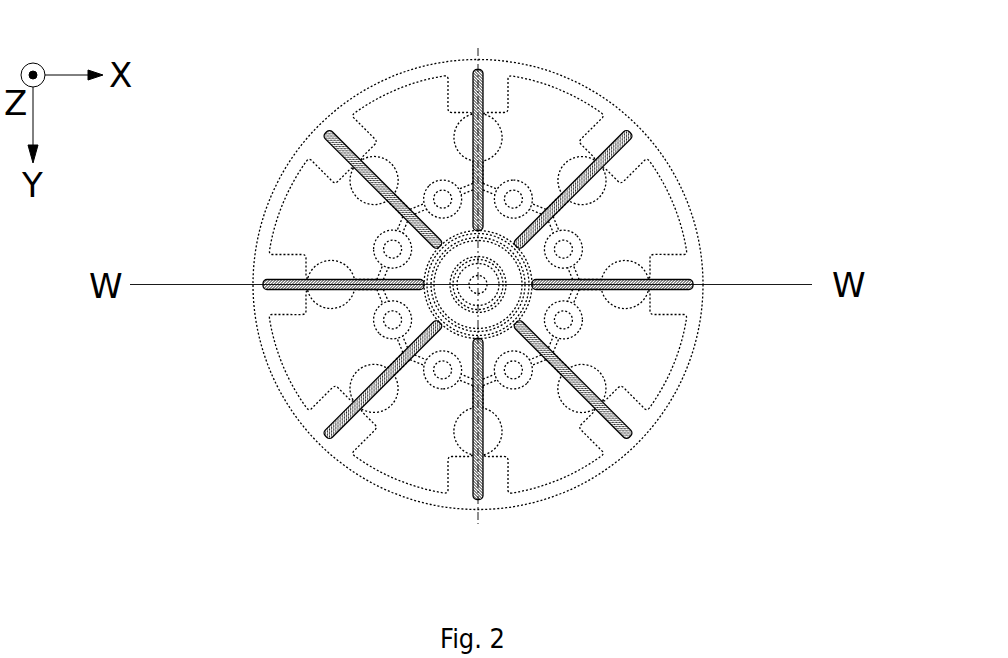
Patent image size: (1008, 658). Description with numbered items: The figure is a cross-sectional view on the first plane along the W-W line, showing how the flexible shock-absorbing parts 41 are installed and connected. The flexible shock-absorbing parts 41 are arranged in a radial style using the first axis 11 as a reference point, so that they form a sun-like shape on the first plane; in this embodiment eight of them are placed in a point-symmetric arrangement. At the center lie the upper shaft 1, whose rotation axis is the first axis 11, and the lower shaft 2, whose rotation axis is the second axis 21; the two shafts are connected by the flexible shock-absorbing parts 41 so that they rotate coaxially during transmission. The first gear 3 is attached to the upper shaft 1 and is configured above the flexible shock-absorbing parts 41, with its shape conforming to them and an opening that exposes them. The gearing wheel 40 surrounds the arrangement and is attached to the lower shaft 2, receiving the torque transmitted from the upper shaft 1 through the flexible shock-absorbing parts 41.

The upper shaft 1 is at (523, 292).
The lower shaft 2 is at (455, 270).
The first gear 3 is at (430, 265).
The first axis 11 is at (480, 283).
The second axis 21 is at (490, 296).
The gearing wheel 40 is at (292, 158).
The flexible shock-absorbing parts 41 is at (336, 130).